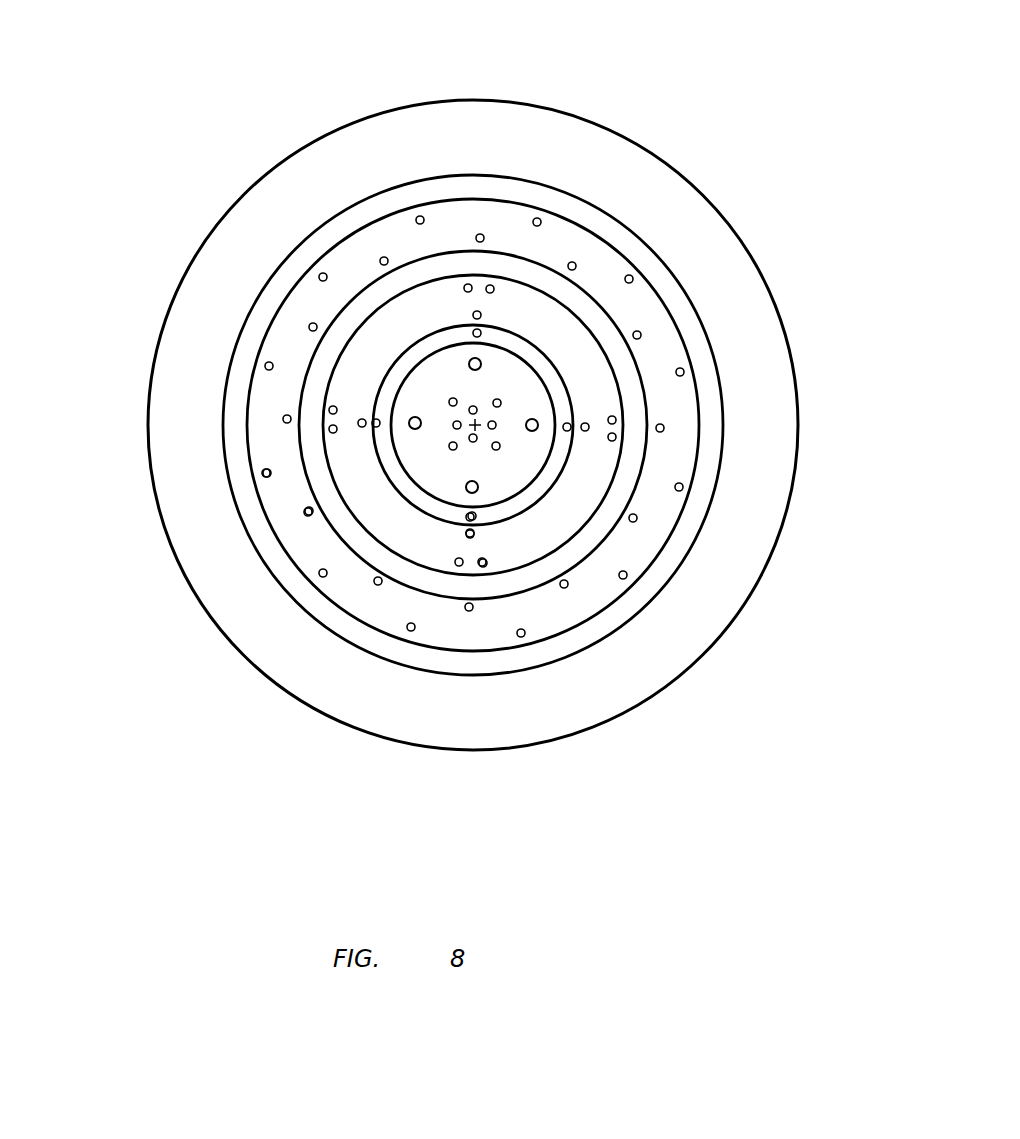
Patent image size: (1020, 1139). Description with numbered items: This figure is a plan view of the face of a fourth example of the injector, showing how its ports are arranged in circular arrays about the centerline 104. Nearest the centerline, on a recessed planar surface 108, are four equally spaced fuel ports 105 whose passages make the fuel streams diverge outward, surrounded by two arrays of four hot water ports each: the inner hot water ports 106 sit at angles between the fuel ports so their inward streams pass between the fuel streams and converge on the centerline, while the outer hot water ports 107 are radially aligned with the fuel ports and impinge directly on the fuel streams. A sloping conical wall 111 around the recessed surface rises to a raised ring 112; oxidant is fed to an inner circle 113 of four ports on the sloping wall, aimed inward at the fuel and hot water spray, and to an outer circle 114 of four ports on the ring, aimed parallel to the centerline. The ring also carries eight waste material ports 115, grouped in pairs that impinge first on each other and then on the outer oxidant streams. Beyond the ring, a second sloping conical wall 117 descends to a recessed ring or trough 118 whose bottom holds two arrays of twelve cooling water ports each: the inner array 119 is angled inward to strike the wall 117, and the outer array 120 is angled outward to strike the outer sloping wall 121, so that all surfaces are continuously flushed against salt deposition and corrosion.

The centerline 104 is at (483, 415).
The fuel ports 105 is at (500, 420).
The inner hot water ports 106 is at (502, 442).
The outer hot water ports 107 is at (538, 420).
The recessed planar surface 108 is at (445, 403).
The sloping conical wall 111 is at (555, 455).
The raised ring 112 is at (390, 355).
The inner circle of oxidant ports 113 is at (478, 516).
The outer circle of oxidant ports 114 is at (478, 535).
The waste material ports 115 is at (490, 566).
The second sloping conical wall 117 is at (423, 583).
The recessed ring 118 is at (322, 319).
The inner circular array of cooling water ports 119 is at (298, 509).
The outer circular array of cooling water ports 120 is at (260, 472).
The outer sloping wall 121 is at (240, 405).